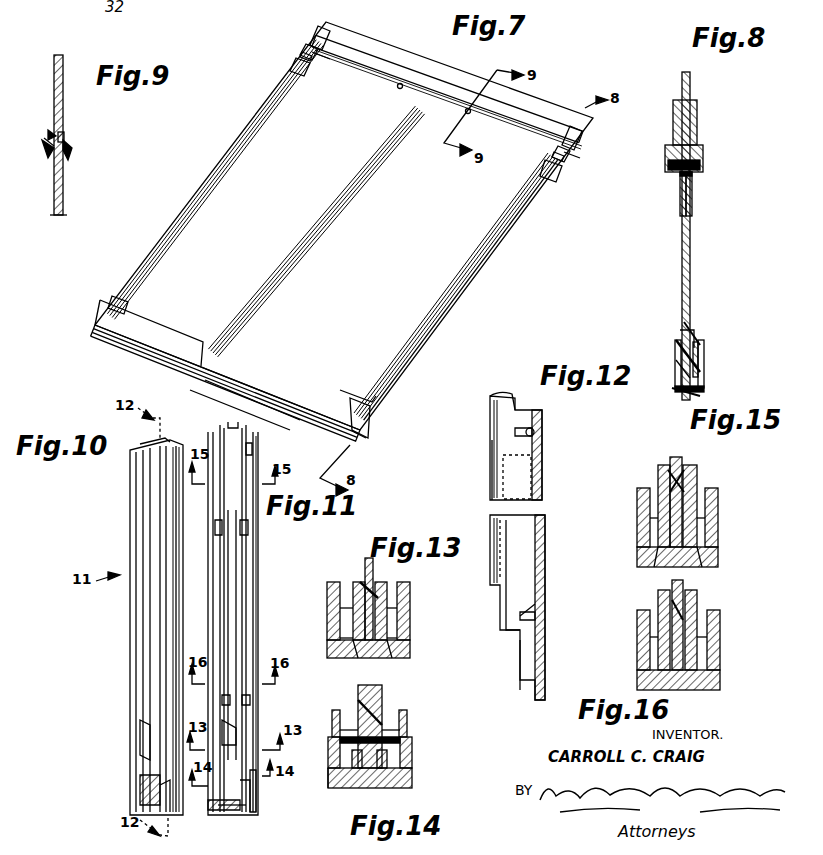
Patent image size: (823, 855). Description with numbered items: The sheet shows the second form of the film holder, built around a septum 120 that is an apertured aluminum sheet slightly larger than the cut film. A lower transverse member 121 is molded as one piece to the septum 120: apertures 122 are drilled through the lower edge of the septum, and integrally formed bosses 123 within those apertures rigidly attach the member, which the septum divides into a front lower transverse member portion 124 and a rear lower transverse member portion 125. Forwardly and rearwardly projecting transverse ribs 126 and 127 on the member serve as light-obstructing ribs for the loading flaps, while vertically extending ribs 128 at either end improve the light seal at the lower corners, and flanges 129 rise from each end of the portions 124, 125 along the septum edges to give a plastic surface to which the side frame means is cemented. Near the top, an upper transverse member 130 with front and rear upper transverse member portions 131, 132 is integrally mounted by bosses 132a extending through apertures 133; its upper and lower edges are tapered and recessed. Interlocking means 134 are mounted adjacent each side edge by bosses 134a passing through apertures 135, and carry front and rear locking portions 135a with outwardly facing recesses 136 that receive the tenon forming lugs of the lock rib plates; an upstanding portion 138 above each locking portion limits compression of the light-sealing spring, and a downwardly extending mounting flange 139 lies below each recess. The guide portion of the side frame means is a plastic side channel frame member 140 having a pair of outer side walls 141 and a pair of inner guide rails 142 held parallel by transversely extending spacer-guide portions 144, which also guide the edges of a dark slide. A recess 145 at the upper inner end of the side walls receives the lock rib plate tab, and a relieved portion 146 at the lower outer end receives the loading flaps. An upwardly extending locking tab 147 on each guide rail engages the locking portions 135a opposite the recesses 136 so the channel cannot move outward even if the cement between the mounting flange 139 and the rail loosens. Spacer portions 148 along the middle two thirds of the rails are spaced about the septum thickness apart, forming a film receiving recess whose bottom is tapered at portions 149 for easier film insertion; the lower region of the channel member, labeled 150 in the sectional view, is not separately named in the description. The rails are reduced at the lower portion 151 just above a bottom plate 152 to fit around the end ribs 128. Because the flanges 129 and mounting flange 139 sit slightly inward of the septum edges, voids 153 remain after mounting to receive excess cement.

In FIG. 9, the septum 120 is at (63, 185).
In FIG. 7, the septum 120 is at (344, 226).
In FIG. 8, the septum 120 is at (690, 287).
In FIG. 13, the septum 120 is at (369, 599).
In FIG. 14, the septum 120 is at (382, 688).
In FIG. 15, the septum 120 is at (670, 460).
In FIG. 16, the septum 120 is at (683, 582).
In FIG. 7, the lower transverse member 121 is at (122, 378).
In FIG. 8, the apertures 122 is at (680, 338).
In FIG. 8, the bosses 123 is at (696, 338).
In FIG. 7, the front lower transverse member portion 124 is at (258, 378).
In FIG. 8, the front lower transverse member portion 124 is at (676, 366).
In FIG. 8, the rear lower transverse member portion 125 is at (698, 350).
In FIG. 7, the forwardly projecting transverse rib 126 is at (300, 392).
In FIG. 8, the forwardly projecting transverse rib 126 is at (672, 392).
In FIG. 8, the rearwardly projecting transverse rib 127 is at (704, 390).
In FIG. 7, the vertically extending ribs 128 is at (110, 304).
In FIG. 8, the vertically extending ribs 128 is at (675, 378).
In FIG. 14, the vertically extending ribs 128 is at (400, 712).
In FIG. 7, the flanges 129 is at (376, 400).
In FIG. 8, the flanges 129 is at (676, 347).
In FIG. 13, the flanges 129 is at (364, 586).
In FIG. 14, the flanges 129 is at (382, 700).
In FIG. 9, the upper transverse member 130 is at (46, 160).
In FIG. 7, the upper transverse member 130 is at (392, 100).
In FIG. 9, the front upper transverse member portion 131 is at (44, 146).
In FIG. 7, the front upper transverse member portion 131 is at (505, 127).
In FIG. 9, the rear upper transverse member portion 132 is at (72, 142).
In FIG. 9, the bosses 132a is at (64, 133).
In FIG. 9, the apertures 133 is at (48, 132).
In FIG. 7, the interlocking means 134 is at (328, 56).
In FIG. 8, the bosses 134a is at (678, 212).
In FIG. 8, the apertures 135 is at (692, 200).
In FIG. 7, the locking portions 135a is at (300, 48).
In FIG. 8, the locking portions 135a is at (665, 157).
In FIG. 7, the outwardly facing recesses 136 is at (300, 56).
In FIG. 8, the outwardly facing recesses 136 is at (668, 170).
In FIG. 7, the upstanding portion 138 is at (312, 26).
In FIG. 8, the upstanding portion 138 is at (673, 128).
In FIG. 7, the mounting flange 139 is at (292, 70).
In FIG. 8, the mounting flange 139 is at (680, 190).
In FIG. 15, the mounting flange 139 is at (658, 492).
In FIG. 12, the side channel frame member 140 is at (542, 490).
In FIG. 10, the side channel frame member 140 is at (184, 436).
In FIG. 11, the side channel frame member 140 is at (256, 610).
In FIG. 13, the side channel frame member 140 is at (410, 654).
In FIG. 14, the side channel frame member 140 is at (412, 786).
In FIG. 15, the side channel frame member 140 is at (718, 556).
In FIG. 16, the side channel frame member 140 is at (720, 668).
In FIG. 10, the side walls 141 is at (150, 446).
In FIG. 11, the side walls 141 is at (215, 582).
In FIG. 13, the side walls 141 is at (410, 592).
In FIG. 14, the side walls 141 is at (328, 742).
In FIG. 15, the side walls 141 is at (637, 516).
In FIG. 16, the side walls 141 is at (637, 632).
In FIG. 12, the inner guide rails 142 is at (492, 452).
In FIG. 10, the inner guide rails 142 is at (142, 480).
In FIG. 11, the inner guide rails 142 is at (213, 428).
In FIG. 13, the inner guide rails 142 is at (327, 584).
In FIG. 15, the inner guide rails 142 is at (658, 470).
In FIG. 16, the inner guide rails 142 is at (658, 620).
In FIG. 12, the spacer-guide portions 144 is at (540, 432).
In FIG. 11, the spacer-guide portions 144 is at (215, 528).
In FIG. 13, the spacer-guide portions 144 is at (345, 630).
In FIG. 15, the spacer-guide portions 144 is at (650, 538).
In FIG. 16, the spacer-guide portions 144 is at (650, 656).
In FIG. 11, the recess 145 is at (252, 448).
In FIG. 10, the relieved portion 146 is at (140, 786).
In FIG. 11, the relieved portion 146 is at (256, 782).
In FIG. 14, the relieved portion 146 is at (333, 710).
In FIG. 12, the locking tab 147 is at (492, 398).
In FIG. 10, the locking tab 147 is at (140, 446).
In FIG. 11, the locking tab 147 is at (238, 414).
In FIG. 12, the spacer portions 148 is at (500, 487).
In FIG. 11, the spacer portions 148 is at (230, 565).
In FIG. 16, the spacer portions 148 is at (658, 600).
In FIG. 12, the tapered portions 149 is at (520, 606).
In FIG. 10, the tapered portions 149 is at (140, 722).
In FIG. 11, the tapered portions 149 is at (238, 722).
In FIG. 12, the lower leg 150 is at (532, 660).
In FIG. 11, the lower portion 151 is at (246, 810).
In FIG. 14, the lower portion 151 is at (335, 792).
In FIG. 11, the bottom plate 152 is at (230, 812).
In FIG. 13, the voids 153 is at (386, 666).
In FIG. 14, the voids 153 is at (362, 790).
In FIG. 15, the voids 153 is at (637, 565).